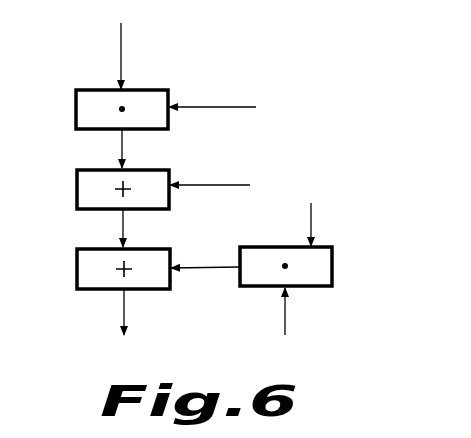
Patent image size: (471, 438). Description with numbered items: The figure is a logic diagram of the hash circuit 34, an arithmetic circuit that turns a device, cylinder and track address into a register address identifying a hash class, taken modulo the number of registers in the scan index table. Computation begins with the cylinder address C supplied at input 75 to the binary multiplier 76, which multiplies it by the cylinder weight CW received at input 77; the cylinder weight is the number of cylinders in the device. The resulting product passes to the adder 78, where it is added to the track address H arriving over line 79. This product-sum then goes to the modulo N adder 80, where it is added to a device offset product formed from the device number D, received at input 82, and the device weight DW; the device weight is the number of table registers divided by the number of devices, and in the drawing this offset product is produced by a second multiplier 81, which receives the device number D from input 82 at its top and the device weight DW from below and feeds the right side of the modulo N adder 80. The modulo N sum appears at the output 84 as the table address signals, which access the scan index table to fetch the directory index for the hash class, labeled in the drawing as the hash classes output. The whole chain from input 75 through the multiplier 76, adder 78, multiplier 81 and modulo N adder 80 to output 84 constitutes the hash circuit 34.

The hash circuit 34 is at (74, 226).
The cylinder address input 75 is at (121, 51).
The binary multiplier 76 is at (135, 90).
The cylinder weight input 77 is at (208, 108).
The adder 78 is at (139, 170).
The track address line 79 is at (210, 186).
The modulo N adder 80 is at (140, 249).
The multiplier 81 is at (278, 247).
The device number input 82 is at (311, 213).
The output 84 is at (125, 305).